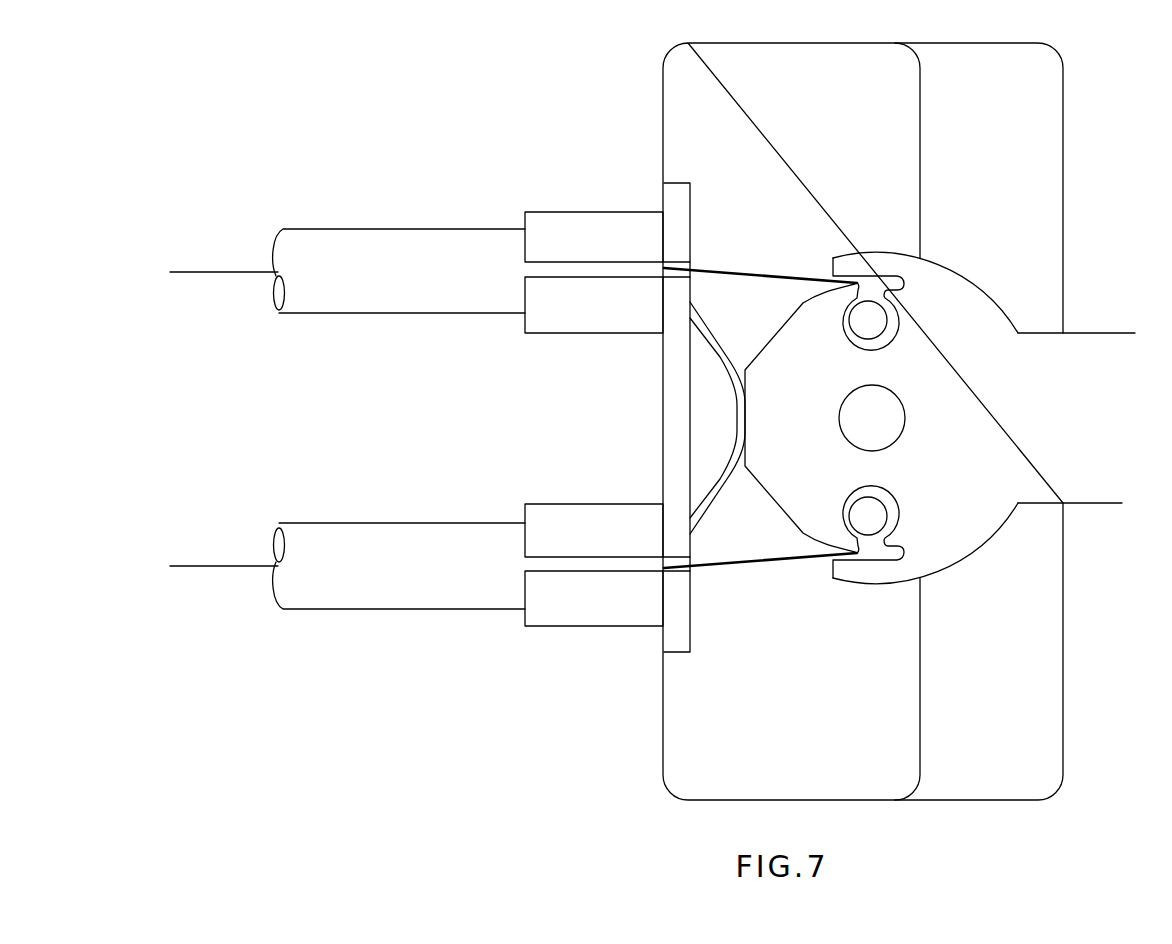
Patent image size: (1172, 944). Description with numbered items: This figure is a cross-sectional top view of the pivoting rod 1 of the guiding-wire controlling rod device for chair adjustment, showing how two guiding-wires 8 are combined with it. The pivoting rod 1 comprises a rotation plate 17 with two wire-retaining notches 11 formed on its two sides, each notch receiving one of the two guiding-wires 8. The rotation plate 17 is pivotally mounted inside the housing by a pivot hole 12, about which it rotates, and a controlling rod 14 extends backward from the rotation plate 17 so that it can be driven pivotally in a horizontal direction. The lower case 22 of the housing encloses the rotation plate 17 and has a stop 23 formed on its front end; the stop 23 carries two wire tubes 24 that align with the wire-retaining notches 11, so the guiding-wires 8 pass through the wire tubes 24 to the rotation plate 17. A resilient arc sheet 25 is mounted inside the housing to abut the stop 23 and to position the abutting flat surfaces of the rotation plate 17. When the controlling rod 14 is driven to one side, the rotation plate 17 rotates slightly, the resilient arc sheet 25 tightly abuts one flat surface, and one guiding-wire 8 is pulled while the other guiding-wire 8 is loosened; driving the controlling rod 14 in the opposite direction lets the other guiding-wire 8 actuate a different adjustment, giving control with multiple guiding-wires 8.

The pivoting rod 1 is at (1037, 509).
The guiding-wire 8 is at (745, 270).
The wire-retaining notch 11 is at (895, 337).
The pivot hole 12 is at (906, 418).
The controlling rod 14 is at (1097, 333).
The rotation plate 17 is at (937, 327).
The lower case 22 is at (1053, 658).
The stop 23 is at (668, 438).
The wire tube 24 is at (576, 214).
The resilient arc sheet 25 is at (729, 377).